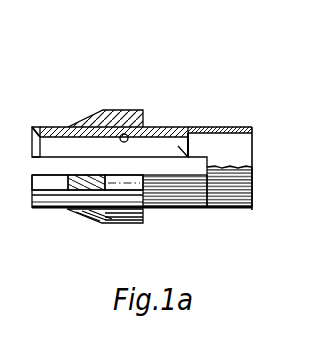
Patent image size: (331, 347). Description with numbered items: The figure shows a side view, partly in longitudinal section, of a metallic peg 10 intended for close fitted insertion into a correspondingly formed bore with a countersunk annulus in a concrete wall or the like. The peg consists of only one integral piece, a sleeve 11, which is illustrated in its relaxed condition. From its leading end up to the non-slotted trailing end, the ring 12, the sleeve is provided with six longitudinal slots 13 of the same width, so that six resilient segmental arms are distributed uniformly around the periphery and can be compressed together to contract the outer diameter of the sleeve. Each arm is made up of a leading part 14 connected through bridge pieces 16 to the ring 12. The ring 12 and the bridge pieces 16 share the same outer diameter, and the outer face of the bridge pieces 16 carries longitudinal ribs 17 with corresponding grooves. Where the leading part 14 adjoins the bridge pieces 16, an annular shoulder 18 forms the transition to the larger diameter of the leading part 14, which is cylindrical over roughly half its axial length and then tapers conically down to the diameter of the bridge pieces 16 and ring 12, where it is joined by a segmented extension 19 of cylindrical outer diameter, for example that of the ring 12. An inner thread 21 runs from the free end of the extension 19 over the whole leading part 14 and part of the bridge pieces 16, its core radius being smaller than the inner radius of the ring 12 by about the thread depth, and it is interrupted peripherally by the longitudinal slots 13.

The metallic peg 10 is at (179, 117).
The sleeve 11 is at (214, 121).
The ring 12 is at (238, 128).
The longitudinal slots 13 is at (54, 186).
The leading part 14 is at (91, 104).
The bridge pieces 16 is at (173, 143).
The longitudinal ribs 17 is at (238, 207).
The annular shoulder 18 is at (146, 223).
The segmented extension 19 is at (47, 126).
The inner thread 21 is at (124, 134).